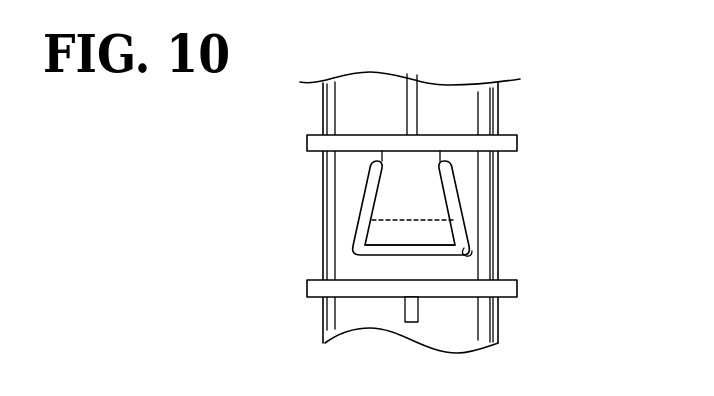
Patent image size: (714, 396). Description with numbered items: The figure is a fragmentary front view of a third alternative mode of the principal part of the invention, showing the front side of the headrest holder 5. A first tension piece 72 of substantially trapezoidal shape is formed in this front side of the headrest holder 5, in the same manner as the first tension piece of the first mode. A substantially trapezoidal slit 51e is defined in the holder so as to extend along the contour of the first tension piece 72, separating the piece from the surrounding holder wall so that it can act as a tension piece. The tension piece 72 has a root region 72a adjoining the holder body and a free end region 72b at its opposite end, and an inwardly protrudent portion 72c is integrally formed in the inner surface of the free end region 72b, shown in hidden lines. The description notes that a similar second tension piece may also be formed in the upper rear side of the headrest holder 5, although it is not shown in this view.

The headrest holder 5 is at (499, 95).
The first tension piece 72 is at (414, 203).
The base portion 72a is at (408, 162).
The free end region 72b is at (387, 228).
The inwardly protrudent portion 72c is at (423, 233).
The slit 51e is at (472, 252).